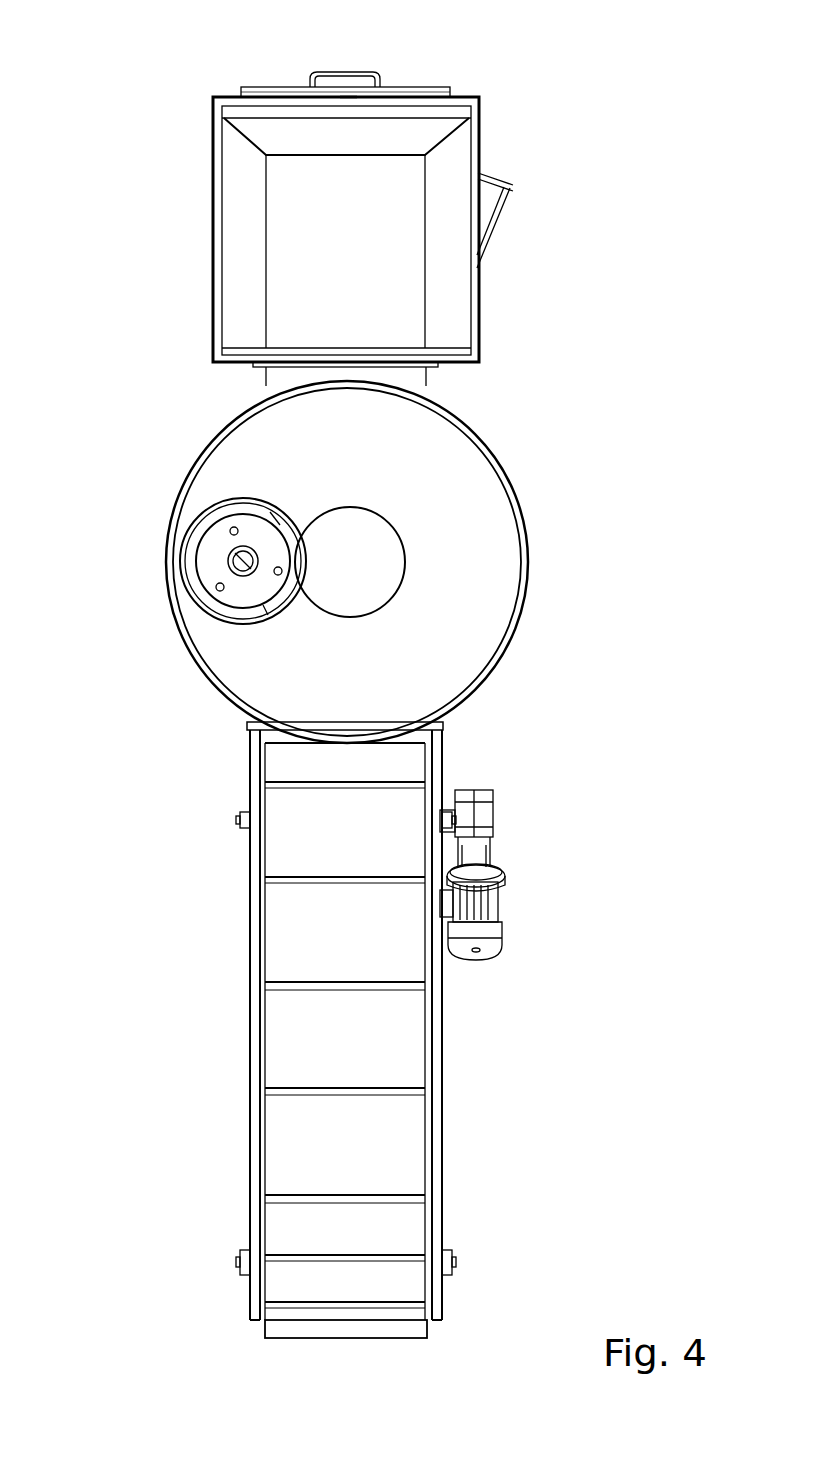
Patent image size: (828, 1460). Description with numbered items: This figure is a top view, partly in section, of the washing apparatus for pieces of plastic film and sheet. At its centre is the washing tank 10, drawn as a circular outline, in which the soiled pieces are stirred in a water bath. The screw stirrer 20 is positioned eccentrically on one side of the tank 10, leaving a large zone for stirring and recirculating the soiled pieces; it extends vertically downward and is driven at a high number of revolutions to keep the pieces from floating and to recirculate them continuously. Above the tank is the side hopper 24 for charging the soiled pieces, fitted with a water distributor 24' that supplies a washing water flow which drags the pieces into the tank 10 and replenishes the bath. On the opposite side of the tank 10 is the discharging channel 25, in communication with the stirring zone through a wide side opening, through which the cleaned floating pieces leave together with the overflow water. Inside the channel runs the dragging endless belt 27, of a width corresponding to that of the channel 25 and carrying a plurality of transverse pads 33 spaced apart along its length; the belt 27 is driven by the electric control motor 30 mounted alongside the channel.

The washing tank 10 is at (508, 476).
The screw stirrer 20 is at (218, 548).
The side hopper 24 is at (308, 241).
The water distributor 24' is at (326, 51).
The discharging channel 25 is at (250, 1140).
The dragging endless belt 27 is at (298, 933).
The electric control motor 30 is at (498, 905).
The transverse pads 33 is at (300, 873).